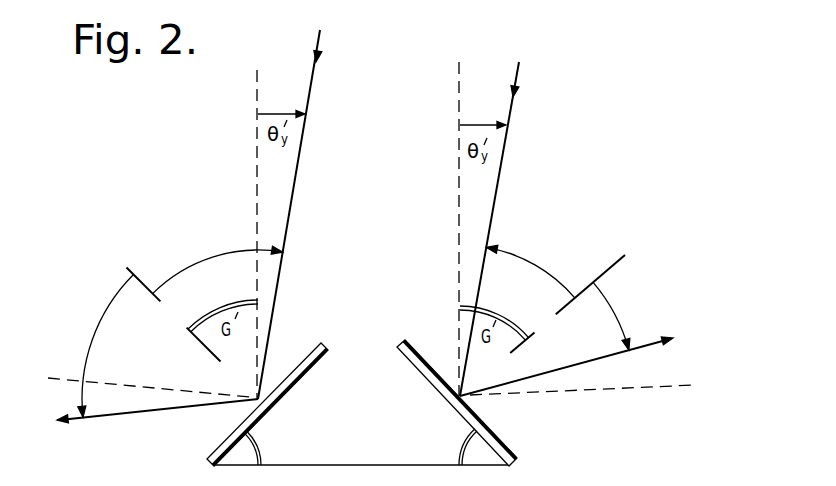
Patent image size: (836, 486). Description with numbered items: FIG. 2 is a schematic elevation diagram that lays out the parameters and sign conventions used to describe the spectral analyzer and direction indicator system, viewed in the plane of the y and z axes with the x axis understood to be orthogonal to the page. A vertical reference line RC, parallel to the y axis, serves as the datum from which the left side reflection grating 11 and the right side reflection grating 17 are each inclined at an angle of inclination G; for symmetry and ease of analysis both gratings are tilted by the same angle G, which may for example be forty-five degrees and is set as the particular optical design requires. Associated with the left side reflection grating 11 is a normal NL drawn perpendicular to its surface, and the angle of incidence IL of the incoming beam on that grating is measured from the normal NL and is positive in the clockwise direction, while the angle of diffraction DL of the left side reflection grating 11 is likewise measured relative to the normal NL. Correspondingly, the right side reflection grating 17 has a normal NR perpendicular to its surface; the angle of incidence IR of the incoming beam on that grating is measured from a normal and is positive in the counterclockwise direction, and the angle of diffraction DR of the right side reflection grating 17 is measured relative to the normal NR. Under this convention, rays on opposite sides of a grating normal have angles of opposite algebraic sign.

The left side reflection grating 11 is at (205, 457).
The right side reflection grating 17 is at (518, 459).
The angle of inclination G is at (255, 433).
The reference line (vertical) RC is at (456, 93).
The normal to left side reflection grating NL is at (130, 269).
The normal to right side reflection grating NR is at (627, 257).
The angle of incidence of left side reflection grating IL is at (213, 262).
The angle of incidence of right side reflection grating IR is at (523, 251).
The angle of diffraction of left side reflection grating DL is at (103, 323).
The angle of diffraction of right side reflection grating DR is at (612, 307).